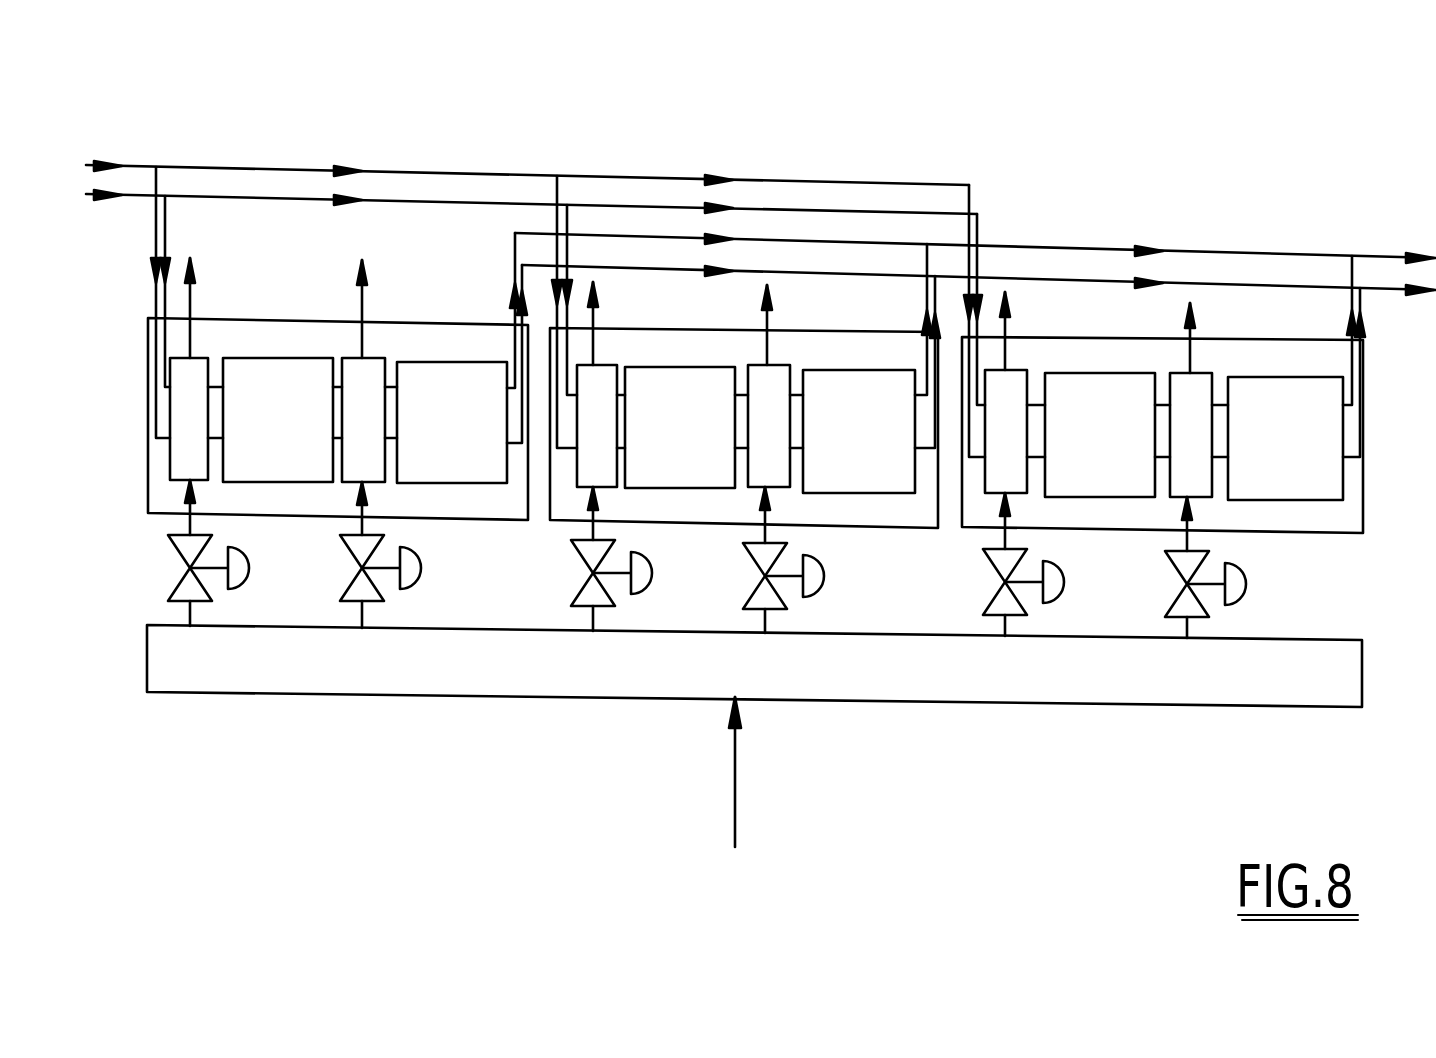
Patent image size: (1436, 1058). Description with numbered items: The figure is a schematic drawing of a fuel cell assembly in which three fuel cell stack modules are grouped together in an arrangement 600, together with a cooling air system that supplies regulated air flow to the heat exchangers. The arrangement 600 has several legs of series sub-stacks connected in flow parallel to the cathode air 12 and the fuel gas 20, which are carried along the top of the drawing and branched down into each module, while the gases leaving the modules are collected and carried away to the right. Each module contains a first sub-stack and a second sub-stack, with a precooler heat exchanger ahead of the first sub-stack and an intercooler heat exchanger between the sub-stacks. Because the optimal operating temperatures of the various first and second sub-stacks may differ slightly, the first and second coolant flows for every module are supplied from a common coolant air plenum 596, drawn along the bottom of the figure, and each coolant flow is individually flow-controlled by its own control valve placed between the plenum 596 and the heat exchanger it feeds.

The cathode air 12 is at (137, 196).
The fuel gas 20 is at (136, 163).
The coolant air plenum 596 is at (942, 692).
The arrangement 600 is at (1225, 212).